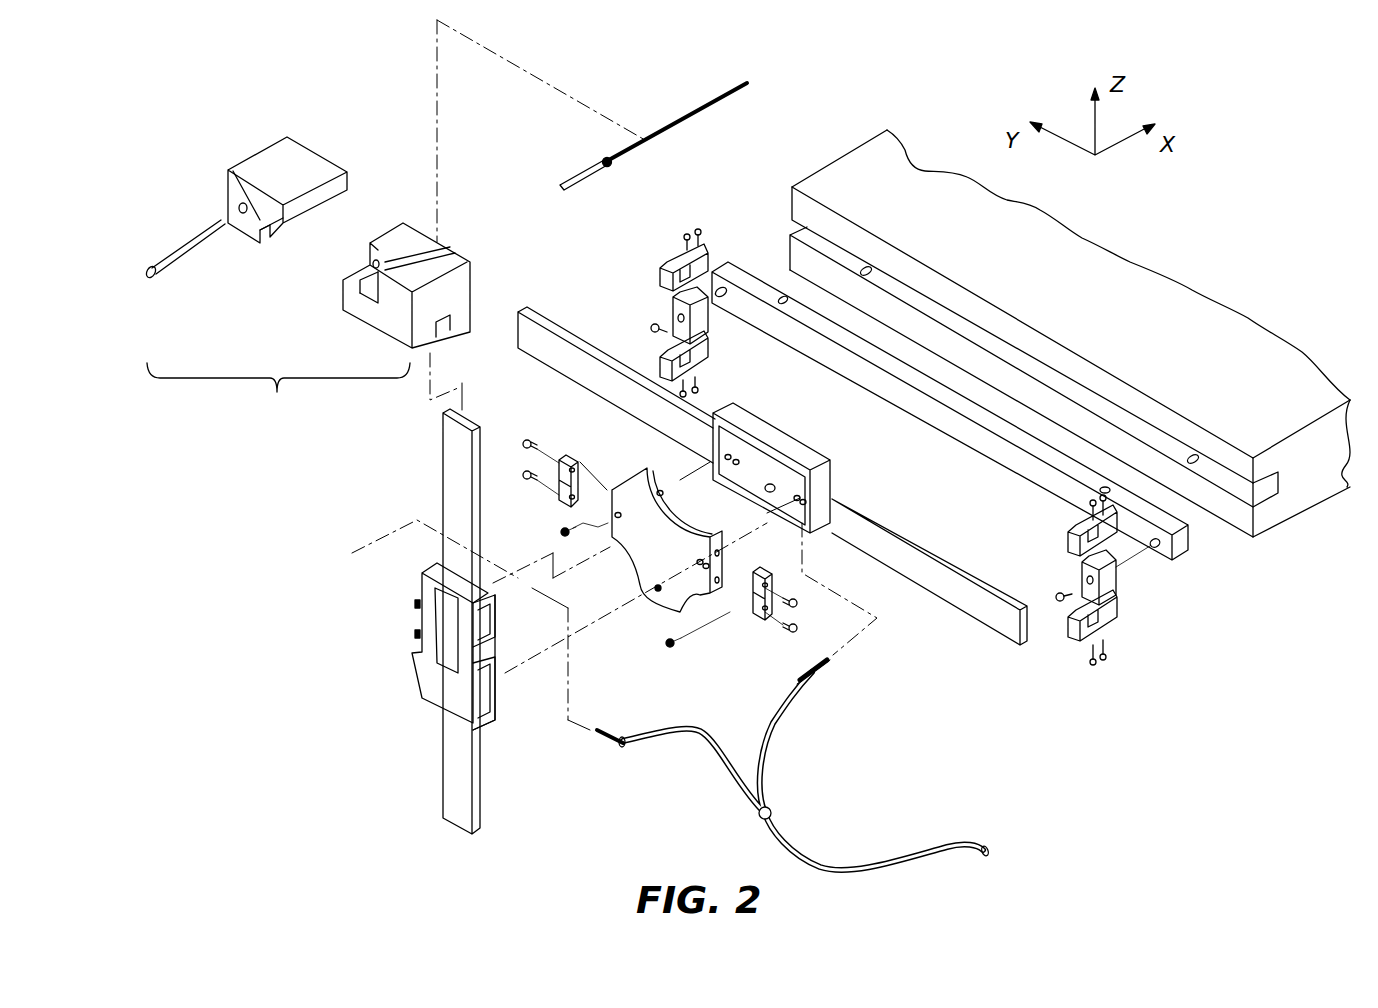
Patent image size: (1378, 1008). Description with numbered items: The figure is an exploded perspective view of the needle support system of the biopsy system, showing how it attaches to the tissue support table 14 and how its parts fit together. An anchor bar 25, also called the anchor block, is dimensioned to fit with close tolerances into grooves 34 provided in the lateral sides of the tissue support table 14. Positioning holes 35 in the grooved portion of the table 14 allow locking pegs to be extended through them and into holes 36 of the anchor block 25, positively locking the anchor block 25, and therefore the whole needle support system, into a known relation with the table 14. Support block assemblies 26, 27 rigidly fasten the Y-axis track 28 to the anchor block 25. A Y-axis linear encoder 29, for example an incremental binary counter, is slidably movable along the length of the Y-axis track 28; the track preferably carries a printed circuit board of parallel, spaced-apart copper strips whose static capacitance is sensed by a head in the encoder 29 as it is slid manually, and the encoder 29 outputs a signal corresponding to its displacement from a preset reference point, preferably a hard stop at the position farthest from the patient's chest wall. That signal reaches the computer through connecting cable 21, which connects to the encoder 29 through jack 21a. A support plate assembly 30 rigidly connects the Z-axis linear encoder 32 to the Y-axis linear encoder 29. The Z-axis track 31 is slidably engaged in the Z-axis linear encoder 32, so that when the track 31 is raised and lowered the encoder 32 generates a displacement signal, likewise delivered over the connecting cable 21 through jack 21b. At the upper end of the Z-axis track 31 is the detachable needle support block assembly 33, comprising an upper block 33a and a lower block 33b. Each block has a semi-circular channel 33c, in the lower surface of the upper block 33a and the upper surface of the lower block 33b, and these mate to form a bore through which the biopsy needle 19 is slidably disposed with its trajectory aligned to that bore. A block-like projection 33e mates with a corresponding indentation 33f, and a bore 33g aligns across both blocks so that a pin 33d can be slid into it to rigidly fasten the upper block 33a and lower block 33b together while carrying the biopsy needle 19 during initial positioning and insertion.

The tissue support table 14 is at (1316, 490).
The biopsy needle 19 is at (724, 102).
The connecting cable 21 is at (803, 850).
The jack 21a is at (822, 672).
The jack 21b is at (598, 748).
The anchor bar 25 is at (980, 440).
The support block assembly 26 is at (1135, 594).
The support block assembly 27 is at (651, 264).
The Y-axis track 28 is at (970, 607).
The Y-axis linear encoder 29 is at (783, 440).
The support plate assembly 30 is at (716, 624).
The Z-axis track 31 is at (442, 765).
The Z-axis linear encoder 32 is at (412, 653).
The needle support block assembly 33 is at (340, 268).
The upper block 33a is at (258, 150).
The lower block 33b is at (470, 287).
The semi-circular channel 33c is at (240, 175).
The pin 33d is at (153, 273).
The block-like projection 33e is at (270, 240).
The indentation 33f is at (360, 287).
The bore 33g is at (238, 207).
The grooves 34 is at (1010, 355).
The positioning holes 35 is at (870, 268).
The holes 36 is at (777, 298).